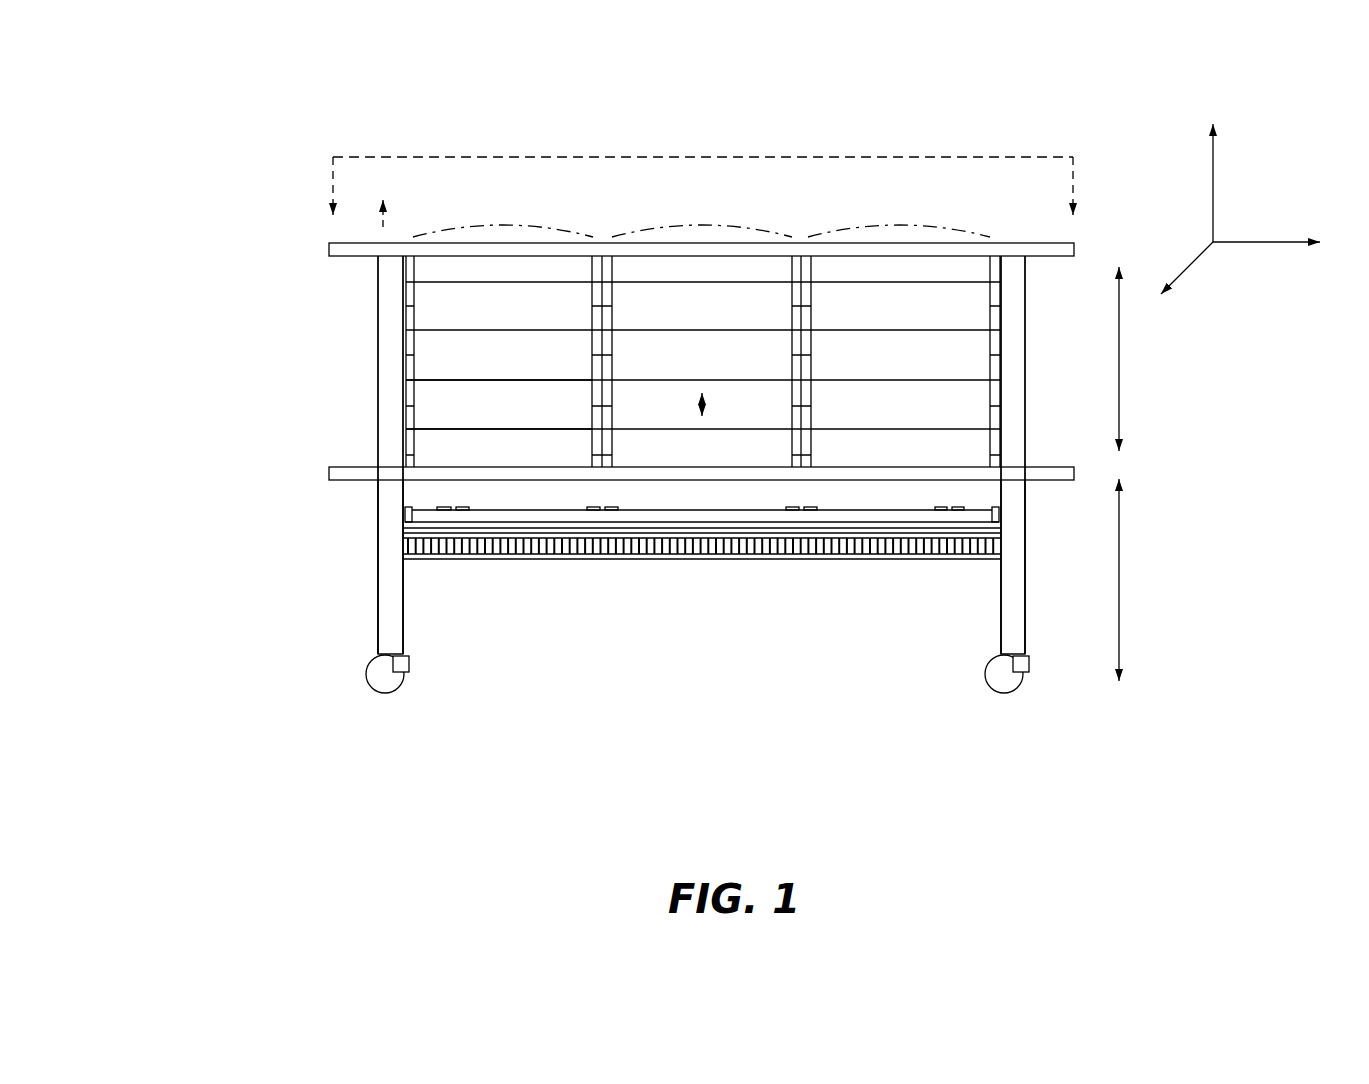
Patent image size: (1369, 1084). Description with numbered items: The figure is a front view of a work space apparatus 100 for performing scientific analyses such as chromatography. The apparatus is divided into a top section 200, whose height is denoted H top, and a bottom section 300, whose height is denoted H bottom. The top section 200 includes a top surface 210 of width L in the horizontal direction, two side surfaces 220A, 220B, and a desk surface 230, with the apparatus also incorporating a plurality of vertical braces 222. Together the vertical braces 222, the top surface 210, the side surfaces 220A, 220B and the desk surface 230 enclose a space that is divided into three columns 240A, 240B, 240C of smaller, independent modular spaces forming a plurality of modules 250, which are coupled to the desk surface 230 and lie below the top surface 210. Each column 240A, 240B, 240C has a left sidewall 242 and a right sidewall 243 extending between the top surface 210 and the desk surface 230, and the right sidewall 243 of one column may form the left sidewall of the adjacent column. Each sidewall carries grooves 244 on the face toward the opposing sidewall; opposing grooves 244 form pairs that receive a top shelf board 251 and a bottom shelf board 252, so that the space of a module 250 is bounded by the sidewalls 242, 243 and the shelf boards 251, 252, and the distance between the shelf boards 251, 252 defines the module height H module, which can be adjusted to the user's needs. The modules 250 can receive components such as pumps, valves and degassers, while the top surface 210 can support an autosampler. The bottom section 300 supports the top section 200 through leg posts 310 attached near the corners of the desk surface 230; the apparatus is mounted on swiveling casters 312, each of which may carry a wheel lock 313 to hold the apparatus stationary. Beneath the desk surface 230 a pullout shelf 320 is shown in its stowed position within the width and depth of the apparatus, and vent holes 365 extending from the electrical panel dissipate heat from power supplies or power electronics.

The work space apparatus 100 is at (150, 121).
The top section 200 is at (188, 375).
The top surface 210 is at (317, 246).
The side surface 220A is at (364, 287).
The side surface 220B is at (1039, 292).
The vertical braces 222 is at (386, 360).
The desk surface 230 is at (317, 473).
The column 240A is at (503, 220).
The column 240B is at (702, 220).
The column 240C is at (899, 220).
The left sidewall 242 is at (428, 297).
The right sidewall 243 is at (580, 297).
The groove 244 is at (428, 355).
The module 250 is at (421, 405).
The top shelf board 251 is at (464, 395).
The bottom shelf board 252 is at (543, 416).
The bottom section 300 is at (188, 555).
The leg post 310 is at (364, 630).
The caster 312 is at (358, 687).
The wheel lock 313 is at (423, 663).
The pullout shelf 320 is at (392, 514).
The vent holes 365 is at (612, 572).